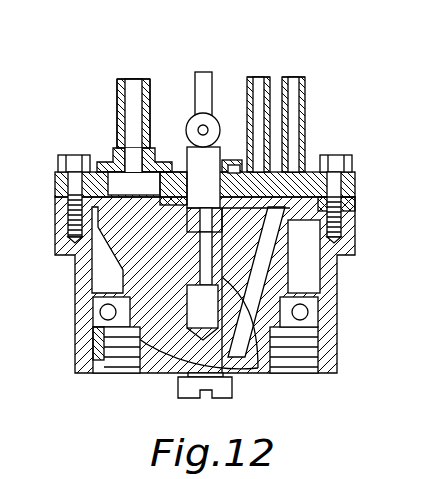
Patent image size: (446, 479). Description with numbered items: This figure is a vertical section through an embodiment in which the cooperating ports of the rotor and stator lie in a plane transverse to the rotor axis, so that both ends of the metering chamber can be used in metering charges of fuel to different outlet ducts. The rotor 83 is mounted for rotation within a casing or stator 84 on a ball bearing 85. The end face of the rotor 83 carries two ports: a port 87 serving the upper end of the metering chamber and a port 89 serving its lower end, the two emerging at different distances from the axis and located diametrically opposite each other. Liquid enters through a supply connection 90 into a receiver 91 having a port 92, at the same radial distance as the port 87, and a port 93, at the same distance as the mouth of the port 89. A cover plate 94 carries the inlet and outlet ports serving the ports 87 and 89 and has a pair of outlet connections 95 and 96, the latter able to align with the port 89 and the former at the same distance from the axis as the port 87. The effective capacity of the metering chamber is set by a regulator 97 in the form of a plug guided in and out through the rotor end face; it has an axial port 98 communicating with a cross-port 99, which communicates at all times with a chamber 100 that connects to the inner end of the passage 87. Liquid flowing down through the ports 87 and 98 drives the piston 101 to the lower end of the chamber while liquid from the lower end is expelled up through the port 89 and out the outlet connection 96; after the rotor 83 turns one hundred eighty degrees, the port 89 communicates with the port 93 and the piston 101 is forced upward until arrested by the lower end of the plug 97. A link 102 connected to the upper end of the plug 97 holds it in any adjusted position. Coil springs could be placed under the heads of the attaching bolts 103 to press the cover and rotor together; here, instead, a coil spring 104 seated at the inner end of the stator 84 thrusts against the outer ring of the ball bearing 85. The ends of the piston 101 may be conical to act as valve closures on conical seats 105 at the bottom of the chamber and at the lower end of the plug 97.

The rotor 83 is at (132, 278).
The stator 84 is at (82, 310).
The ball bearing 85 is at (334, 307).
The port 87 is at (183, 210).
The port 89 is at (340, 216).
The supply connection 90 is at (117, 101).
The receiver 91 is at (114, 165).
The port 92 is at (176, 192).
The port 93 is at (60, 190).
The cover plate 94 is at (314, 170).
The outlet connection 95 is at (257, 80).
The outlet connection 96 is at (291, 80).
The regulator 97 is at (190, 152).
The axial port 98 is at (202, 286).
The cross-port 99 is at (226, 165).
The chamber 100 is at (237, 163).
The piston 101 is at (165, 370).
The link 102 is at (203, 71).
The attaching bolts 103 is at (332, 185).
The coil spring 104 is at (337, 336).
The conical seats 105 is at (237, 372).